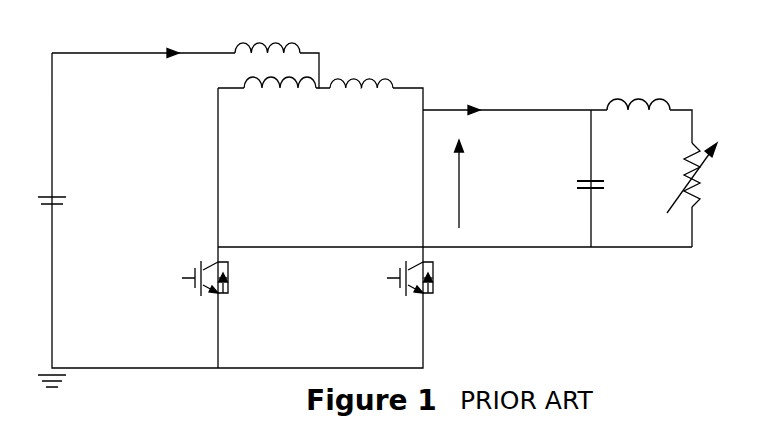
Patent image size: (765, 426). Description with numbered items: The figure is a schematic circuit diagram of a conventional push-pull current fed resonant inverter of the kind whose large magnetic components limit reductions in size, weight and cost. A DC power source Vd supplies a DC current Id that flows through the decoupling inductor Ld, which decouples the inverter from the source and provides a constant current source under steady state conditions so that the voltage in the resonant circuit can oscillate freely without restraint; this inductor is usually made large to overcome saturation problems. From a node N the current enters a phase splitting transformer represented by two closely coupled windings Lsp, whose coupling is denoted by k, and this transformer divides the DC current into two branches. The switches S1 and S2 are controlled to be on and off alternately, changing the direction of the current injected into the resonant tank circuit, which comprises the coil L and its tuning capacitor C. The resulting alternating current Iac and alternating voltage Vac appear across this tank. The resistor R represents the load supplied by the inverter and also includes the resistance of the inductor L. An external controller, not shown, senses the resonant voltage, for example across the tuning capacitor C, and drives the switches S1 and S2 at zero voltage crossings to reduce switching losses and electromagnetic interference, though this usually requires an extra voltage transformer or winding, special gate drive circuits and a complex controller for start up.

The DC voltage source Vd is at (59, 189).
The DC input current Id is at (161, 39).
The decoupling inductor Ld is at (251, 36).
The center tap node N is at (316, 54).
The phase splitting transformer windings Lsp is at (318, 102).
The coupling coefficient k is at (362, 70).
The AC output current Iac is at (489, 96).
The AC output voltage Vac is at (477, 184).
The tuning capacitor C is at (577, 185).
The coil L is at (638, 92).
The resistor R is at (686, 178).
The switch S1 is at (202, 295).
The switch S2 is at (408, 295).